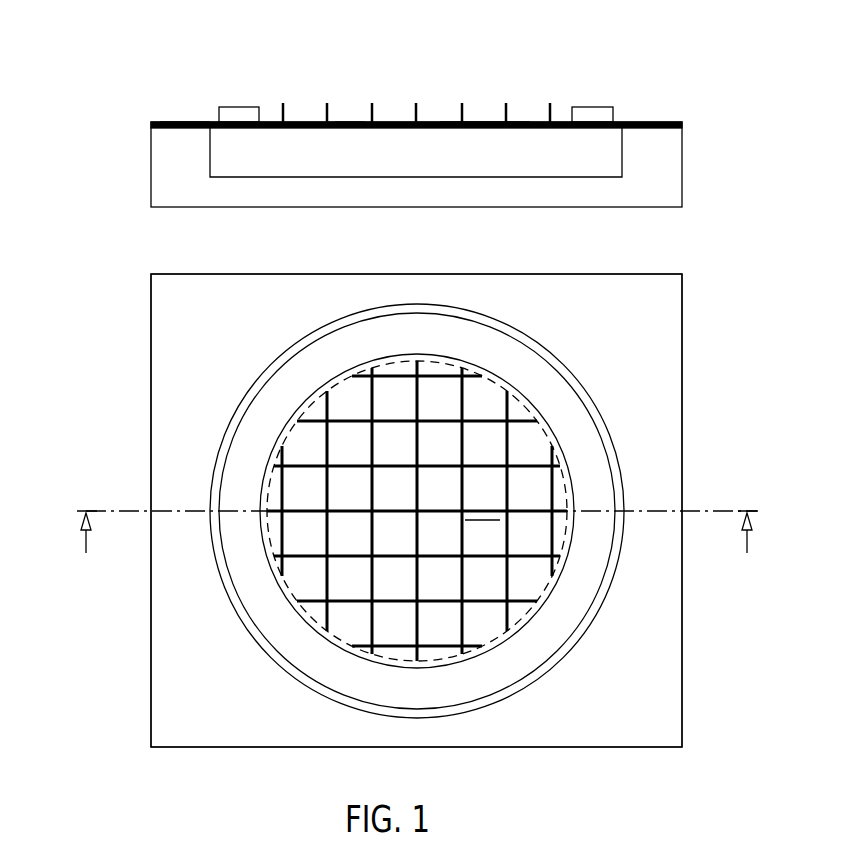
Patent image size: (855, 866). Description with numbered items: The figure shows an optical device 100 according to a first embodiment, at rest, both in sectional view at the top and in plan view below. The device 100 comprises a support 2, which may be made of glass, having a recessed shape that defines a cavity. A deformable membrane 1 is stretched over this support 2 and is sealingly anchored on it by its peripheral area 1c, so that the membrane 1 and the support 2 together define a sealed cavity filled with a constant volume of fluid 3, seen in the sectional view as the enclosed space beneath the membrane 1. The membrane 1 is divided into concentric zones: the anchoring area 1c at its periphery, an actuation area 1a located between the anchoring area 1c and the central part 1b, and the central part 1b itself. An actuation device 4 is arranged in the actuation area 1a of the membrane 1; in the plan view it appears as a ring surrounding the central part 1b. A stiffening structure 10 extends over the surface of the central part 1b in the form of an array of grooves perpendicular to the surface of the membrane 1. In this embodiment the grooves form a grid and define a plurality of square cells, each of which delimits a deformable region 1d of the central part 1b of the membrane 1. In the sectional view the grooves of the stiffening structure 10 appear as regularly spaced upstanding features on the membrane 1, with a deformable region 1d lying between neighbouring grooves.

The optical device 100 is at (116, 303).
The deformable membrane 1 is at (667, 122).
The actuation area 1a is at (596, 121).
The central part 1b is at (485, 97).
The peripheral area 1c is at (182, 119).
The deformable region 1d is at (349, 110).
The support 2 is at (660, 161).
The fluid 3 is at (233, 157).
The actuation device 4 is at (237, 107).
The stiffening structure 10 is at (327, 104).